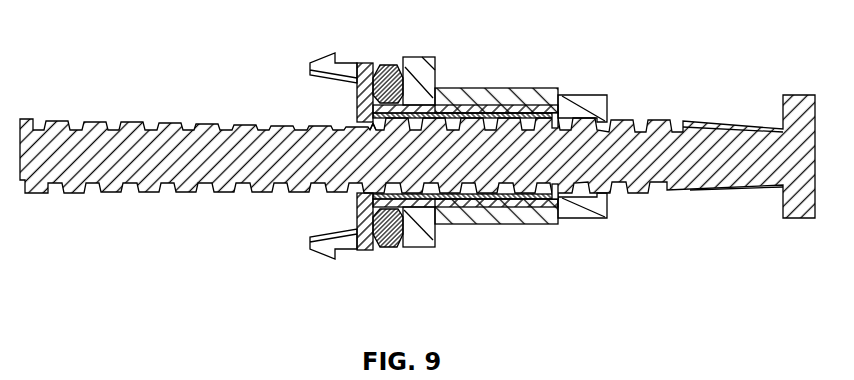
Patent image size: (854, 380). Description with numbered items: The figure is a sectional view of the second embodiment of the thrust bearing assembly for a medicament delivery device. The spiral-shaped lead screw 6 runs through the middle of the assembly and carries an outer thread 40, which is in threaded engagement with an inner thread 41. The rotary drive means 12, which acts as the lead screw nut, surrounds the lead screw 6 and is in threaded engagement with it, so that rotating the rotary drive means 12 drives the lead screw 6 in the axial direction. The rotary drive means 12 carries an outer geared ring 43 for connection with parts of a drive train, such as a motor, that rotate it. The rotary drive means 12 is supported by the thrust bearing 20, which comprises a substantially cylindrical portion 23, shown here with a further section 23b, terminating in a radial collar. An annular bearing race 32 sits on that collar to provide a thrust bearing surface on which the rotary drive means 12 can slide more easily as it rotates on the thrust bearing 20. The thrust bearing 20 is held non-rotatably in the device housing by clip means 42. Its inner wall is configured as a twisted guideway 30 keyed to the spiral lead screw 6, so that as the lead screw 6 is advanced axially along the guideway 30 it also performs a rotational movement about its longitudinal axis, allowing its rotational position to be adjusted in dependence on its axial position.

The lead screw 6 is at (728, 158).
The rotary drive means 12 is at (508, 92).
The thrust bearing 20 is at (448, 200).
The cylindrical portion 23 is at (468, 112).
The lip 23b is at (556, 106).
The guideway 30 is at (372, 128).
The annular bearing race 32 is at (384, 66).
The outer thread 40 is at (633, 121).
The inner thread 41 is at (534, 198).
The clip means 42 is at (325, 62).
The outer geared ring 43 is at (412, 58).